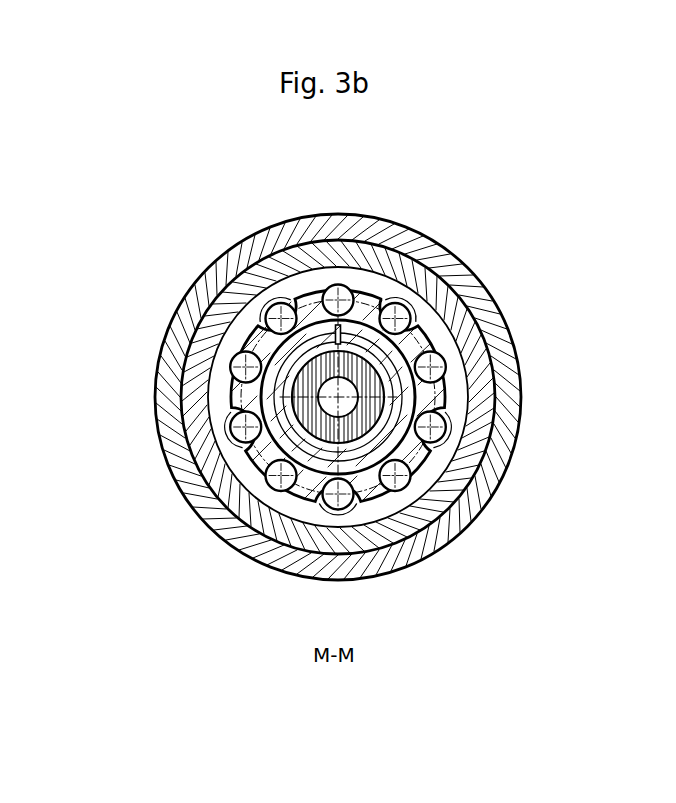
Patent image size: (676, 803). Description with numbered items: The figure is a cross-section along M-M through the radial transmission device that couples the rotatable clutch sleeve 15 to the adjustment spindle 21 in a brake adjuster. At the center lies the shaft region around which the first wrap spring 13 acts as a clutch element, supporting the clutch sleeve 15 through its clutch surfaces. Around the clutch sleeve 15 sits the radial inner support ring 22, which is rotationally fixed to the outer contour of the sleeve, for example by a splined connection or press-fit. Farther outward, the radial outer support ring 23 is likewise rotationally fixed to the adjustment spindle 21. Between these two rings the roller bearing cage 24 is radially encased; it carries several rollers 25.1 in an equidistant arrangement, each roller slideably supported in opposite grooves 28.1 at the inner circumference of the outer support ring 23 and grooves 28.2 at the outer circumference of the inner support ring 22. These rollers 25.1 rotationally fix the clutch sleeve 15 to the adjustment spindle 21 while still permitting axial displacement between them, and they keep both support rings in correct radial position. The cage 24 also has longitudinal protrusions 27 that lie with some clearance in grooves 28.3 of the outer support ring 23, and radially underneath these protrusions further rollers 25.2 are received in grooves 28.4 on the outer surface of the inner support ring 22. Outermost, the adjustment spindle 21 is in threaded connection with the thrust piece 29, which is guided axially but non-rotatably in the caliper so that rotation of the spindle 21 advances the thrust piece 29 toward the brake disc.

The first wrap spring 13 is at (267, 458).
The clutch sleeve 15 is at (308, 465).
The adjustment spindle 21 is at (243, 508).
The radial inner support ring 22 is at (339, 297).
The radial outer support ring 23 is at (298, 287).
The roller bearing cage 24 is at (322, 297).
The rollers 25.1 is at (415, 292).
The rollers 25.2 is at (413, 323).
The longitudinal protrusions 27 is at (460, 448).
The grooves 28.1 is at (232, 377).
The grooves 28.2 is at (233, 370).
The grooves 28.3 is at (450, 418).
The grooves 28.4 is at (377, 490).
The thrust piece 29 is at (260, 547).